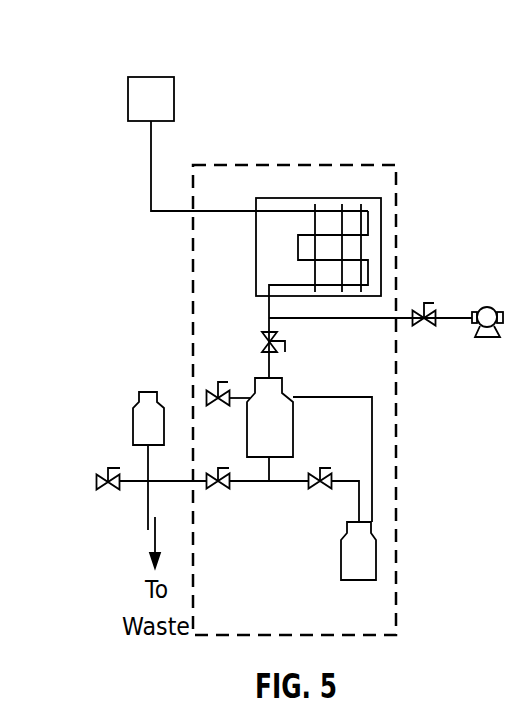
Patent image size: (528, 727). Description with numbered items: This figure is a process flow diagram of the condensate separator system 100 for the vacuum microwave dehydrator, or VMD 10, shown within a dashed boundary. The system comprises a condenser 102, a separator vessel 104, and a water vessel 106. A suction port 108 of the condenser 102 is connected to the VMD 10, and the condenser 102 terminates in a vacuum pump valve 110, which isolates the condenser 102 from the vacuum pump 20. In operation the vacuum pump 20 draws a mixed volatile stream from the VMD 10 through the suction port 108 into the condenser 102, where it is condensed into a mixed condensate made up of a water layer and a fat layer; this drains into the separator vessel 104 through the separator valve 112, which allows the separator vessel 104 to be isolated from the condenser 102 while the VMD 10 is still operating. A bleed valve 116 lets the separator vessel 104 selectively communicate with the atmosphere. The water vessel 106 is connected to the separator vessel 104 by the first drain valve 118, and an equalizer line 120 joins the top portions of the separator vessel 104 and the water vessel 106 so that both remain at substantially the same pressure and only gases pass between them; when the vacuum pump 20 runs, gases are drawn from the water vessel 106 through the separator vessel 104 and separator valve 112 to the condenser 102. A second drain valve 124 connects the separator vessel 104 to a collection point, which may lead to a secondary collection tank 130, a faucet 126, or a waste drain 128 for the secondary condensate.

The VMD 10 is at (151, 77).
The vacuum pump 20 is at (485, 306).
The condensate separator system 100 is at (328, 164).
The condenser 102 is at (381, 221).
The separator vessel 104 is at (284, 383).
The water vessel 106 is at (377, 552).
The suction port 108 is at (151, 176).
The vacuum pump valve 110 is at (432, 326).
The separator valve 112 is at (263, 336).
The bleed valve 116 is at (218, 382).
The first drain valve 118 is at (317, 492).
The equalizer line 120 is at (373, 443).
The second drain valve 124 is at (219, 492).
The faucet 126 is at (96, 479).
The waste drain 128 is at (148, 507).
The secondary collection tank 130 is at (133, 423).